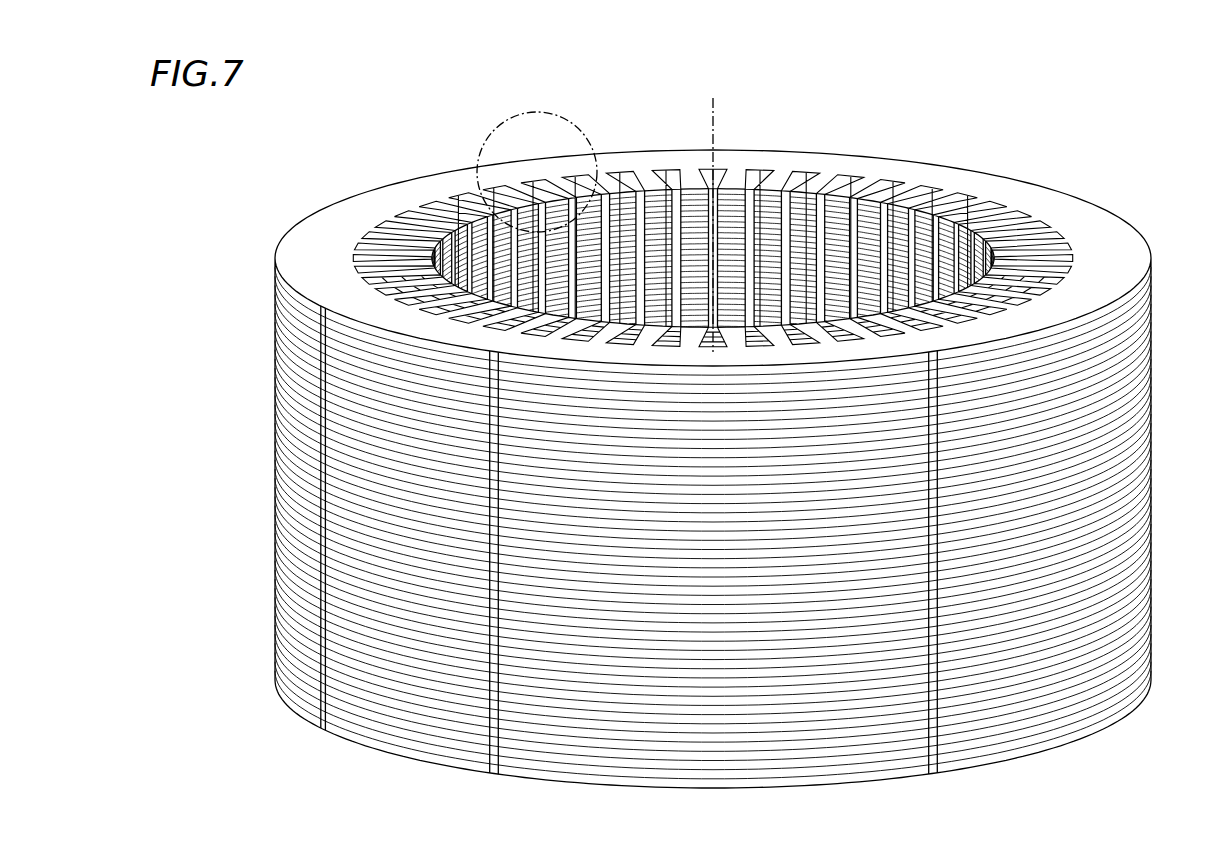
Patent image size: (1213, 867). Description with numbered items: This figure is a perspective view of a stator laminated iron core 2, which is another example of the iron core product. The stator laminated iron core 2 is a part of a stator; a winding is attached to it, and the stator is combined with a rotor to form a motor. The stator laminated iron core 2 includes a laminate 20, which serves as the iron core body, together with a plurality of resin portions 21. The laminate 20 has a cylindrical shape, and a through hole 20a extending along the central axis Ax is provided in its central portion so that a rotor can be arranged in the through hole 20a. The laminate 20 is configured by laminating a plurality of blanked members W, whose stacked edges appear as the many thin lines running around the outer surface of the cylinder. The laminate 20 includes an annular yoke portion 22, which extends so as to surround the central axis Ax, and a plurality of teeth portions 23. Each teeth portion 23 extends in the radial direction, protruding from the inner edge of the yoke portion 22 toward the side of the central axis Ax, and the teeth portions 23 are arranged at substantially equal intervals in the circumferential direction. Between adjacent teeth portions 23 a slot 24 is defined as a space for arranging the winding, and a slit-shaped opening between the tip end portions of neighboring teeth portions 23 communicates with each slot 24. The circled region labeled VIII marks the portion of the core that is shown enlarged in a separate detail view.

The stator laminated iron core 2 is at (1147, 158).
The laminate 20 is at (1031, 164).
The through hole 20a is at (803, 211).
The resin portions 21 is at (753, 172).
The yoke portion 22 is at (1059, 207).
The teeth portions 23 is at (650, 182).
The slot 24 is at (886, 179).
The blanked members W is at (360, 734).
The central axis Ax is at (718, 101).
The detail view region VIII is at (497, 127).